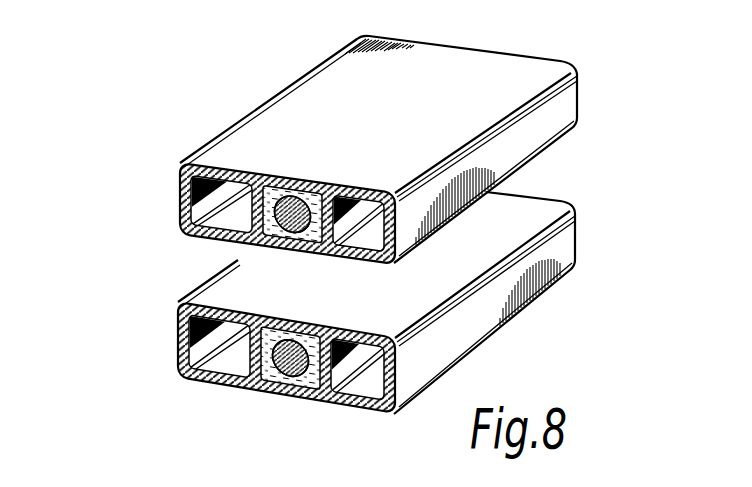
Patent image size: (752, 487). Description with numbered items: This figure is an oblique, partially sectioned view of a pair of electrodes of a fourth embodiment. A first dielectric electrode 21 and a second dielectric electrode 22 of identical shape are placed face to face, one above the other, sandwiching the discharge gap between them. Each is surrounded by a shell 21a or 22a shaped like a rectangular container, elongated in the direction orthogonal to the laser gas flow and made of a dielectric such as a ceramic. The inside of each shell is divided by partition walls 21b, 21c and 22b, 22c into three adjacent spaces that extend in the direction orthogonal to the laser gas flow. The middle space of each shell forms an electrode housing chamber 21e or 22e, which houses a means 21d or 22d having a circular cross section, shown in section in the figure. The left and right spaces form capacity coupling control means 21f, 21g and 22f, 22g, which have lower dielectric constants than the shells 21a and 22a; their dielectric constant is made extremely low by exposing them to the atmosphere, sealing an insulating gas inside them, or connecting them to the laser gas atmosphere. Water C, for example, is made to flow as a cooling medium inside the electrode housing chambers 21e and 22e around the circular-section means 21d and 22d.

The first dielectric electrode 21 is at (562, 119).
The shell 21a is at (180, 186).
The partition wall 21b is at (221, 170).
The partition wall 21c is at (340, 192).
The means with circular cross section 21d is at (311, 193).
The electrode housing chamber 21e is at (272, 182).
The capacity coupling control means 21f is at (224, 218).
The capacity coupling control means 21g is at (386, 256).
The second dielectric electrode 22 is at (560, 249).
The shell 22a is at (178, 324).
The partition wall 22b is at (243, 366).
The partition wall 22c is at (338, 403).
The means with circular cross section 22d is at (314, 333).
The electrode housing chamber 22e is at (266, 322).
The capacity coupling control means 22f is at (217, 360).
The capacity coupling control means 22g is at (383, 408).
The water C is at (270, 233).